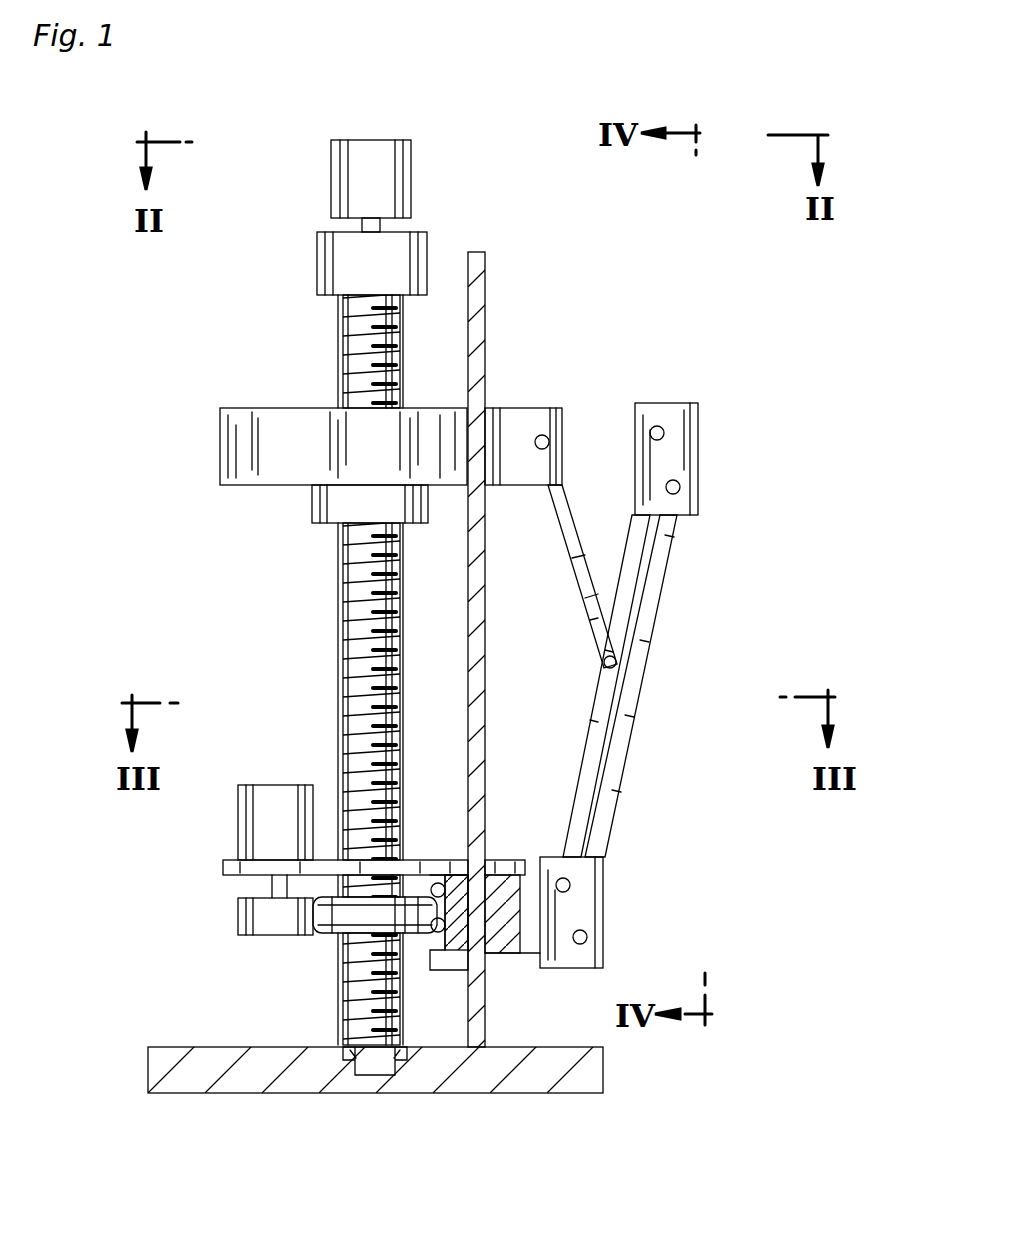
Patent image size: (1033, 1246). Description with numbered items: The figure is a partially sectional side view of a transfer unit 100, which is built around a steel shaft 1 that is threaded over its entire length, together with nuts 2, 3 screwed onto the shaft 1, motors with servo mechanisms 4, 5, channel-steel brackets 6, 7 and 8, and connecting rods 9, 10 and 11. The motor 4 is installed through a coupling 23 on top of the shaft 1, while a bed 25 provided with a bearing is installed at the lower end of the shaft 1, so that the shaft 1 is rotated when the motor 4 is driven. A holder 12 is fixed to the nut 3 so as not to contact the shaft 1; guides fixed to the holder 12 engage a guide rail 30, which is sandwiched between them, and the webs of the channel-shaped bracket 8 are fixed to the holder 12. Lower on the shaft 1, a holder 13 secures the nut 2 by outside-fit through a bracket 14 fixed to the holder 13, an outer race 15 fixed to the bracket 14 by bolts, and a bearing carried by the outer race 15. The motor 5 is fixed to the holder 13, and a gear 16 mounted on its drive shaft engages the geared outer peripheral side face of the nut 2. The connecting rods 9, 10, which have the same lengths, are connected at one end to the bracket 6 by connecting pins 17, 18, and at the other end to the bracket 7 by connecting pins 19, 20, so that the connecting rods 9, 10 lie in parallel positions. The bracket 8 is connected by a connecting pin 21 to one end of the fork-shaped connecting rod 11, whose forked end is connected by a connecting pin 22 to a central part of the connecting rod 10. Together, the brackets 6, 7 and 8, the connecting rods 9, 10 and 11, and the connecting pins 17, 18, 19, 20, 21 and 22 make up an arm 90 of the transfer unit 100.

The steel shaft 1 is at (350, 665).
The nut 2 is at (334, 934).
The nut 3 is at (326, 508).
The motor with servo mechanism 4 is at (411, 170).
The motor with servo mechanism 5 is at (287, 783).
The bracket 6 is at (614, 904).
The bracket 7 is at (715, 424).
The bracket 8 is at (551, 411).
The connecting rod 9 is at (668, 570).
The connecting rod 10 is at (585, 767).
The connecting rod 11 is at (574, 542).
The holder 12 is at (250, 418).
The holder 13 is at (235, 860).
The bracket 14 is at (510, 958).
The outer race 15 is at (455, 966).
The gear 16 is at (242, 912).
The connecting pin 17 is at (570, 885).
The connecting pin 18 is at (587, 940).
The connecting pin 19 is at (662, 428).
The connecting pin 20 is at (681, 487).
The connecting pin 21 is at (549, 440).
The connecting pin 22 is at (604, 662).
The coupling 23 is at (318, 262).
The bed 25 is at (596, 1062).
The guide rail 30 is at (486, 264).
The arm 90 is at (745, 468).
The transfer unit 100 is at (625, 278).